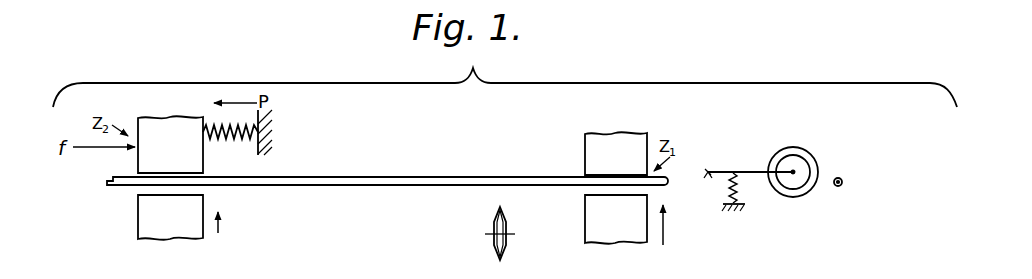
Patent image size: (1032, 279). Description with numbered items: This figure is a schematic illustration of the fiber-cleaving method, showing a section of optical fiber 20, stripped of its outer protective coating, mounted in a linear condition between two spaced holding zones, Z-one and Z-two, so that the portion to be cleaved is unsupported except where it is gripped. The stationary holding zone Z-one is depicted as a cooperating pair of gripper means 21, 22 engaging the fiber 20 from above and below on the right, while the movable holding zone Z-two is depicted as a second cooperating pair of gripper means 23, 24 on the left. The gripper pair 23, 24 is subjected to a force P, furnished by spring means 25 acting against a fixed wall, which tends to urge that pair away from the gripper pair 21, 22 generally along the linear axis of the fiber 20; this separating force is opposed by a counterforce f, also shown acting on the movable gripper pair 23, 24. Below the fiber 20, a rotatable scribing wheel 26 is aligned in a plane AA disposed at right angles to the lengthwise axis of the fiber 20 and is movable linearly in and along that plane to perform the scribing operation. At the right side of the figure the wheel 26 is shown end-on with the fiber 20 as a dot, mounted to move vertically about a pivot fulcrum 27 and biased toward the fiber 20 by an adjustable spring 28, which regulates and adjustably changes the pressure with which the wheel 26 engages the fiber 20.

The optical fiber 20 is at (373, 171).
The gripper means 21 is at (578, 172).
The gripper means 22 is at (578, 199).
The gripper means 23 is at (207, 172).
The gripper means 24 is at (209, 196).
The spring means 25 is at (243, 121).
The rotatable scribing wheel 26 is at (492, 253).
The pivot fulcrum 27 is at (712, 168).
The adjustable spring 28 is at (741, 188).